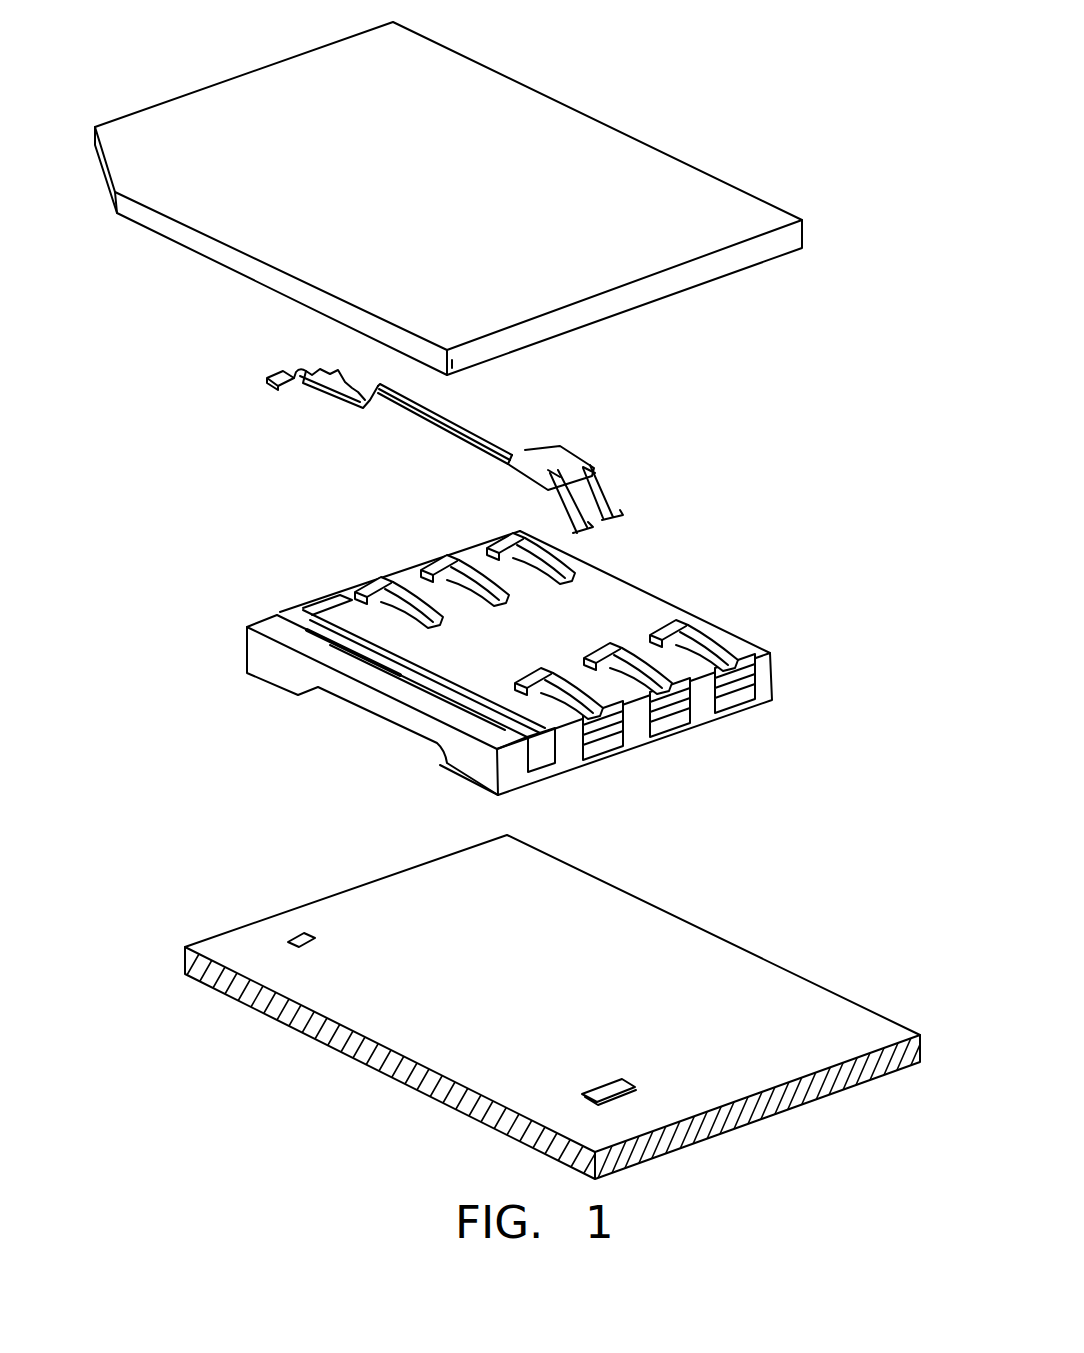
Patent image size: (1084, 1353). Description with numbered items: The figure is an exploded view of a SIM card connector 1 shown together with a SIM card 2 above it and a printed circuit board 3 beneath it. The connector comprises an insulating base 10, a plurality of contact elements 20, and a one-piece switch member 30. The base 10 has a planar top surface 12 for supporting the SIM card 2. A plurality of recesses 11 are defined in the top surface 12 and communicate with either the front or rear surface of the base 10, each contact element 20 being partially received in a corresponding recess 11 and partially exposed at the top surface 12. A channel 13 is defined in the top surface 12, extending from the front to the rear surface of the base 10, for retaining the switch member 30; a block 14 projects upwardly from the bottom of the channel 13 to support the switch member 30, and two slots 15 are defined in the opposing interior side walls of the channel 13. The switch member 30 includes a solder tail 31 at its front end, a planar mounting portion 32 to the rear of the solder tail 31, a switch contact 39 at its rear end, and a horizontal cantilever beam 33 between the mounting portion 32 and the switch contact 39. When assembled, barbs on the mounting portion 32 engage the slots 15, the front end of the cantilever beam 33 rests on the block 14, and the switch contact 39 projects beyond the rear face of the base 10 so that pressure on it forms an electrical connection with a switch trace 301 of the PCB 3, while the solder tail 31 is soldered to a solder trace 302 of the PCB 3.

The SIM card connector 1 is at (198, 359).
The SIM card 2 is at (607, 73).
The printed circuit board 3 is at (808, 955).
The insulating base 10 is at (687, 583).
The recesses 11 is at (740, 707).
The top surface 12 is at (452, 643).
The channel 13 is at (535, 760).
The block 14 is at (440, 687).
The slots 15 is at (323, 630).
The contact elements 20 is at (700, 633).
The switch member 30 is at (500, 413).
The solder tail 31 is at (277, 382).
The mounting portion 32 is at (327, 380).
The cantilever beam 33 is at (453, 433).
The switch contact 39 is at (550, 463).
The switch trace 301 is at (617, 1088).
The solder trace 302 is at (300, 933).